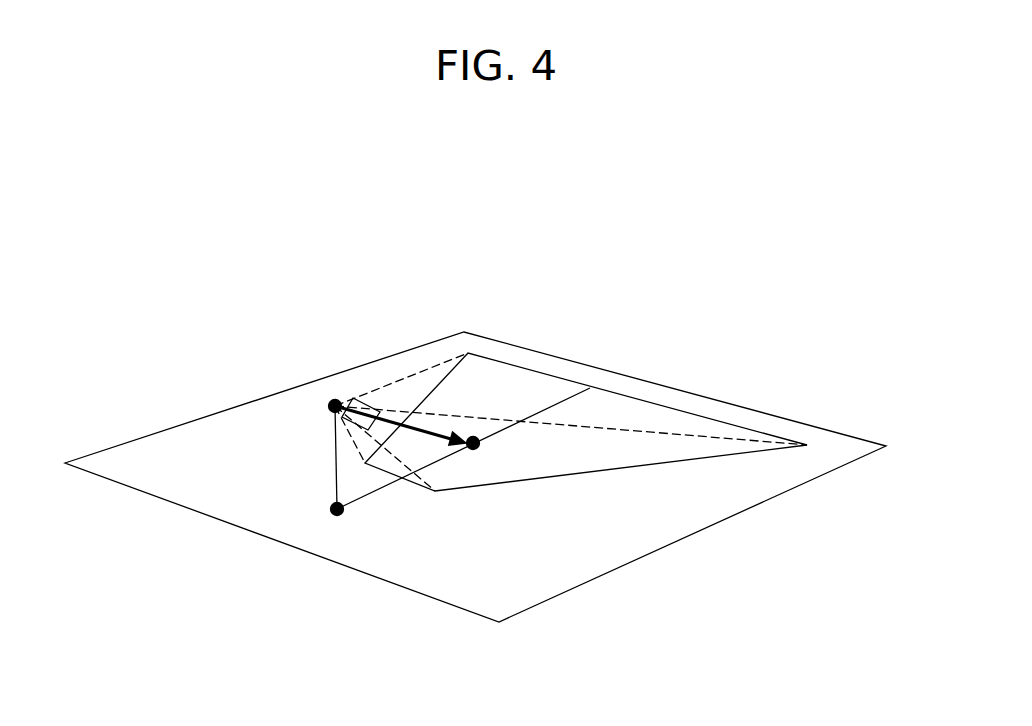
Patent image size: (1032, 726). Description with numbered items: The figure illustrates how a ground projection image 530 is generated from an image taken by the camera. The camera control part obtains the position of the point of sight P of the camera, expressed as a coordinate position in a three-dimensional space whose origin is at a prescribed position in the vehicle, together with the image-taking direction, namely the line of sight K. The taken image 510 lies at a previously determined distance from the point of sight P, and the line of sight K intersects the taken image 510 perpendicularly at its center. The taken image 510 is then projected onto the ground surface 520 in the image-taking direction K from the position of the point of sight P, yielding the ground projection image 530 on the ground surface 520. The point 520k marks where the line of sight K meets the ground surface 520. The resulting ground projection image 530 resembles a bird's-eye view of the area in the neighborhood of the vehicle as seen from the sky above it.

The taken image 510 is at (369, 402).
The ground surface 520 is at (672, 500).
The ground projection image 530 is at (545, 372).
The ground point on line of sight 520k is at (473, 443).
The point of sight P is at (335, 406).
The line of sight K is at (413, 420).